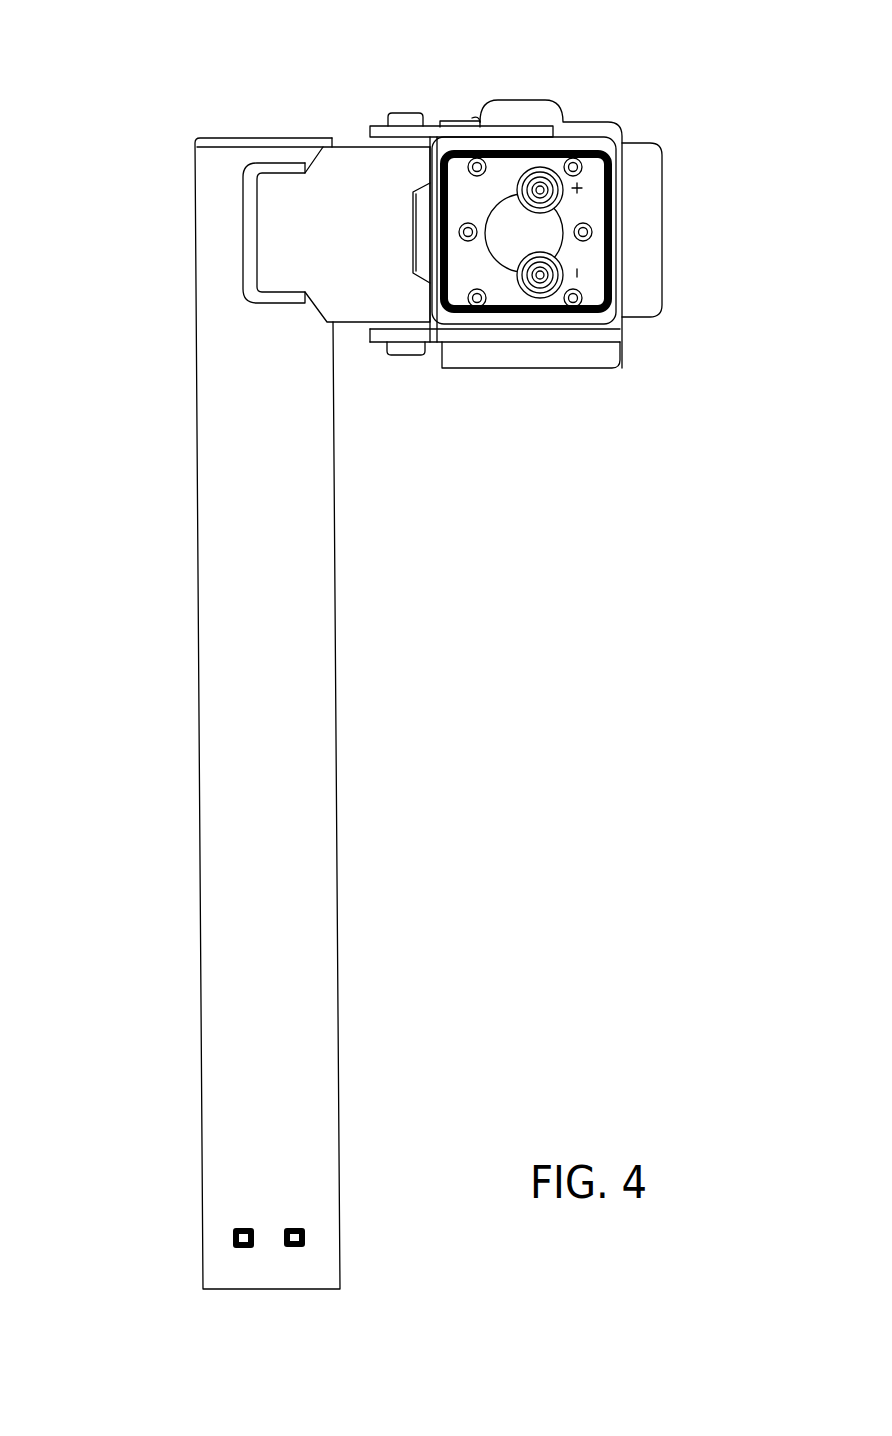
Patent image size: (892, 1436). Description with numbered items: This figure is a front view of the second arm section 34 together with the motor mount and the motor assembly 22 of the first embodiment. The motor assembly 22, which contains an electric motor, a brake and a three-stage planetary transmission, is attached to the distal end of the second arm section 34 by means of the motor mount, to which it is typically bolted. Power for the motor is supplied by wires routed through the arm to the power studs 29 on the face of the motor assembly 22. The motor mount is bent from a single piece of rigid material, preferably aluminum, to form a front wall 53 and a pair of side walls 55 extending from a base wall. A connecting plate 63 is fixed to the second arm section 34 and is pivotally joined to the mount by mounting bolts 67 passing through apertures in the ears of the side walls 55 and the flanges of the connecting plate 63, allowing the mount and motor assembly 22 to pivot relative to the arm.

The motor assembly 22 is at (593, 180).
The power studs 29 is at (554, 300).
The second arm section 34 is at (230, 560).
The front wall 53 is at (645, 220).
The side walls 55 is at (470, 137).
The connecting plate 63 is at (348, 250).
The mounting bolts 67 is at (394, 110).